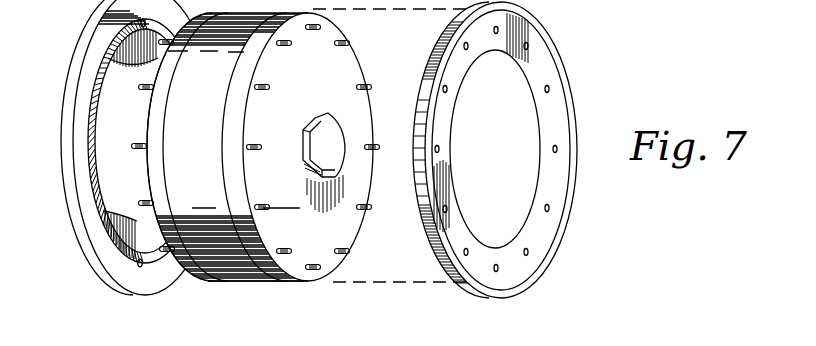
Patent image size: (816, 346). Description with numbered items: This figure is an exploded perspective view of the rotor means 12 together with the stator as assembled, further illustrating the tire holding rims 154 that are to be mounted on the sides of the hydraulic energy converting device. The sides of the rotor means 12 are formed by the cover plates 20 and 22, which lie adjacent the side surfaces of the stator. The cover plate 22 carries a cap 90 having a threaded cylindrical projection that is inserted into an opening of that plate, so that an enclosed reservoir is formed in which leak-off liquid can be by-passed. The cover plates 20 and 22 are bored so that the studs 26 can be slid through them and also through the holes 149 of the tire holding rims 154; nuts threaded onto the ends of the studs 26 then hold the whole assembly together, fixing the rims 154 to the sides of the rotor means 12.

The rotor means 12 is at (222, 252).
The cover plate 20 is at (152, 150).
The cover plate 22 is at (340, 230).
The studs 26 is at (150, 198).
The cap 90 is at (343, 137).
The holes 149 is at (117, 38).
The tire holding rims 154 is at (88, 43).